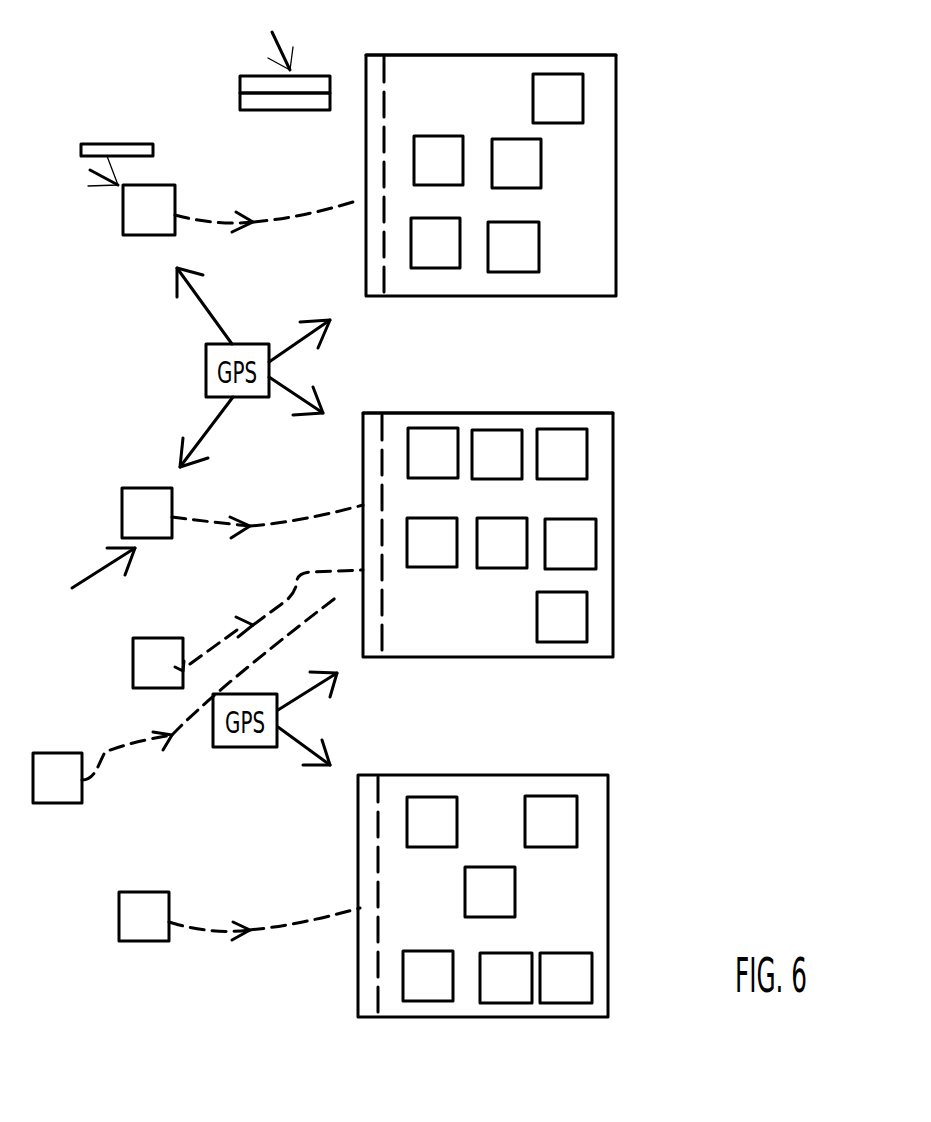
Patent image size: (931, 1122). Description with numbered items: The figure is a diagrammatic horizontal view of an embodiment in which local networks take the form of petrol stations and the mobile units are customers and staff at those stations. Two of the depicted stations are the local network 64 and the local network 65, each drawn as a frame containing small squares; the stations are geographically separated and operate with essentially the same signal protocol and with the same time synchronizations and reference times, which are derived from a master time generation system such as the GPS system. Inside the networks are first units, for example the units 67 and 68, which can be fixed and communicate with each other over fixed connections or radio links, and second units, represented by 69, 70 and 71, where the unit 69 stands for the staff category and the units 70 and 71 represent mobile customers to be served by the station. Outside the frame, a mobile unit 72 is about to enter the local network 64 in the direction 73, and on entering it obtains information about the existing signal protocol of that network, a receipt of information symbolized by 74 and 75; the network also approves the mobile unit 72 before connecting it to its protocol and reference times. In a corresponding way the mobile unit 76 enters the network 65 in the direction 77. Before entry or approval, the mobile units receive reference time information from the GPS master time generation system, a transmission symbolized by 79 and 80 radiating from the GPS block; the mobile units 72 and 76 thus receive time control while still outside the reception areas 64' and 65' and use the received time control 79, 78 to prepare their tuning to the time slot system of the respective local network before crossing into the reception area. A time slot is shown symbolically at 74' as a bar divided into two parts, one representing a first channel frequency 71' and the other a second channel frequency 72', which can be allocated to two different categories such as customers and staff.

The local network 64 is at (491, 207).
The reception area 64' is at (491, 33).
The local network 65 is at (488, 566).
The reception area 65' is at (488, 392).
The first unit 67 is at (522, 163).
The first unit 68 is at (520, 255).
The second unit 69 is at (567, 102).
The second unit 70 is at (437, 245).
The second unit 71 is at (380, 164).
The first channel frequency 71' is at (268, 64).
The mobile unit 72 is at (154, 187).
The second channel frequency 72' is at (270, 123).
The direction 73 is at (252, 222).
The receipt of information 74 is at (119, 133).
The time slot 74' is at (274, 35).
The receipt of information 75 is at (373, 77).
The mobile unit 76 is at (130, 498).
The direction 77 is at (250, 527).
The received time control 78 is at (103, 561).
The transmission of reference time information 79 is at (213, 430).
The transmission of reference time information 80 is at (217, 317).